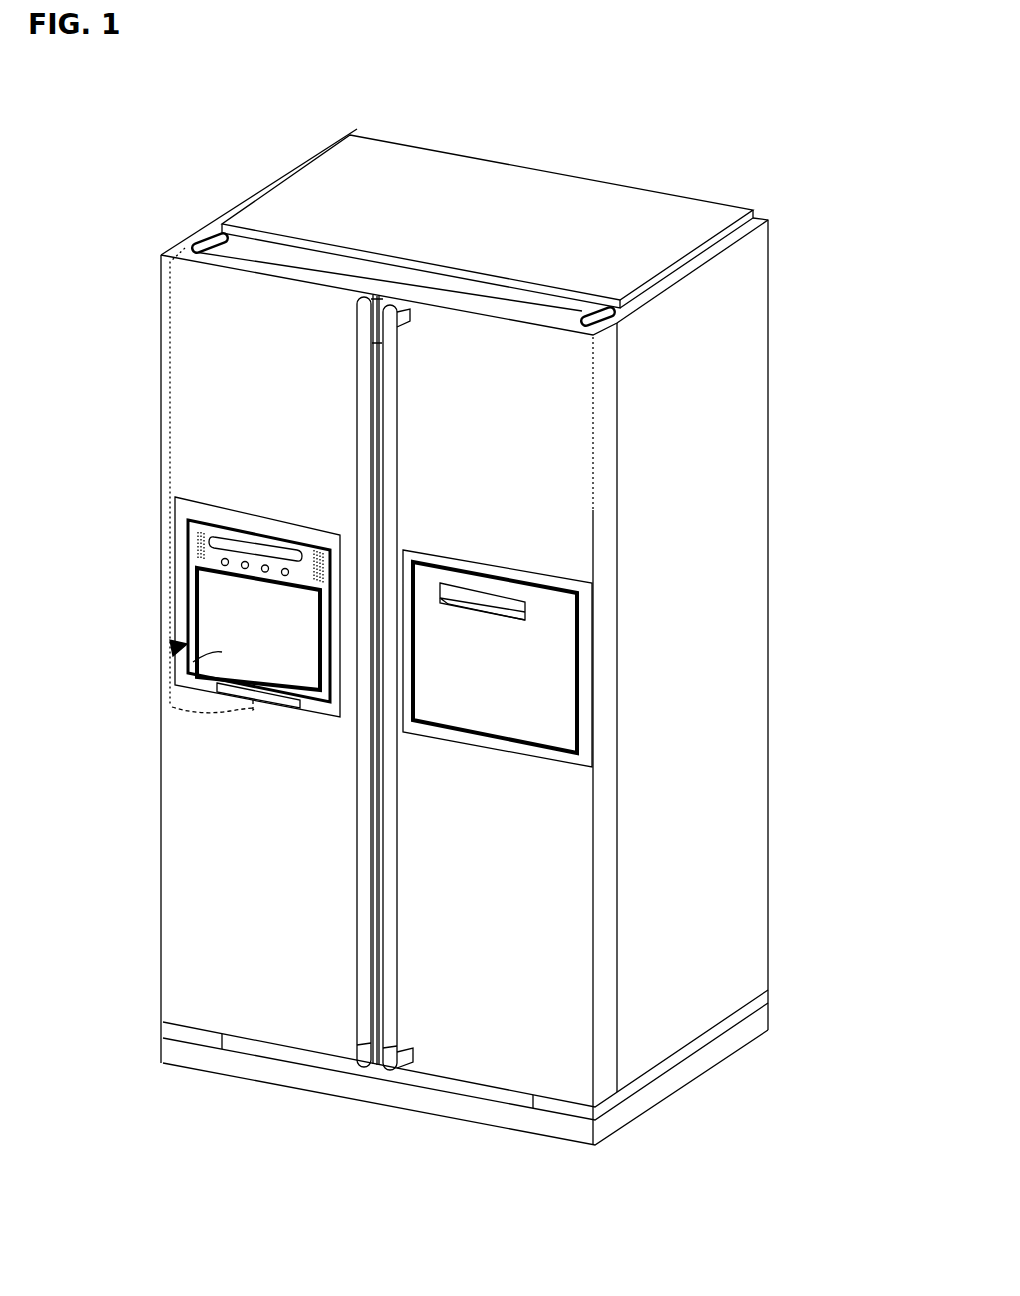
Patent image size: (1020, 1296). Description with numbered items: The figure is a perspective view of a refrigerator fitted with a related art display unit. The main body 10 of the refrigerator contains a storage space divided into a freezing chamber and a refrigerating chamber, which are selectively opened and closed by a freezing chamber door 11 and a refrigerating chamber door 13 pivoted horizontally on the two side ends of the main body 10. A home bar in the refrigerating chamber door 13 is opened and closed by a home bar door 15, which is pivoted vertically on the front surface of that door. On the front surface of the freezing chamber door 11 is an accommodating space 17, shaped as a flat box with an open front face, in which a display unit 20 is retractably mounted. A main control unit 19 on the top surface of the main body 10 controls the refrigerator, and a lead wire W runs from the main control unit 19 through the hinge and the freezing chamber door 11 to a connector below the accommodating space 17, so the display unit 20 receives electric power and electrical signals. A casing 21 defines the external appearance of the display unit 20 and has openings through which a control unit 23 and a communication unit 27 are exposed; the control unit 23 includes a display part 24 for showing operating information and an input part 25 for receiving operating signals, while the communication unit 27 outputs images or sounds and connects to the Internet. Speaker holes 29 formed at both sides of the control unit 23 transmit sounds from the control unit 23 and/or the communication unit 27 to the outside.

The main body 10 is at (802, 298).
The freezing chamber door 11 is at (160, 405).
The refrigerating chamber door 13 is at (580, 467).
The home bar door 15 is at (540, 665).
The accommodating space 17 is at (207, 530).
The main control unit 19 is at (561, 190).
The display unit 20 is at (172, 652).
The casing 21 is at (195, 609).
The control unit 23 is at (176, 567).
The display part 24 is at (212, 547).
The input part 25 is at (222, 564).
The communication unit 27 is at (218, 700).
The speaker holes 29 is at (318, 548).
The lead wire W is at (178, 716).